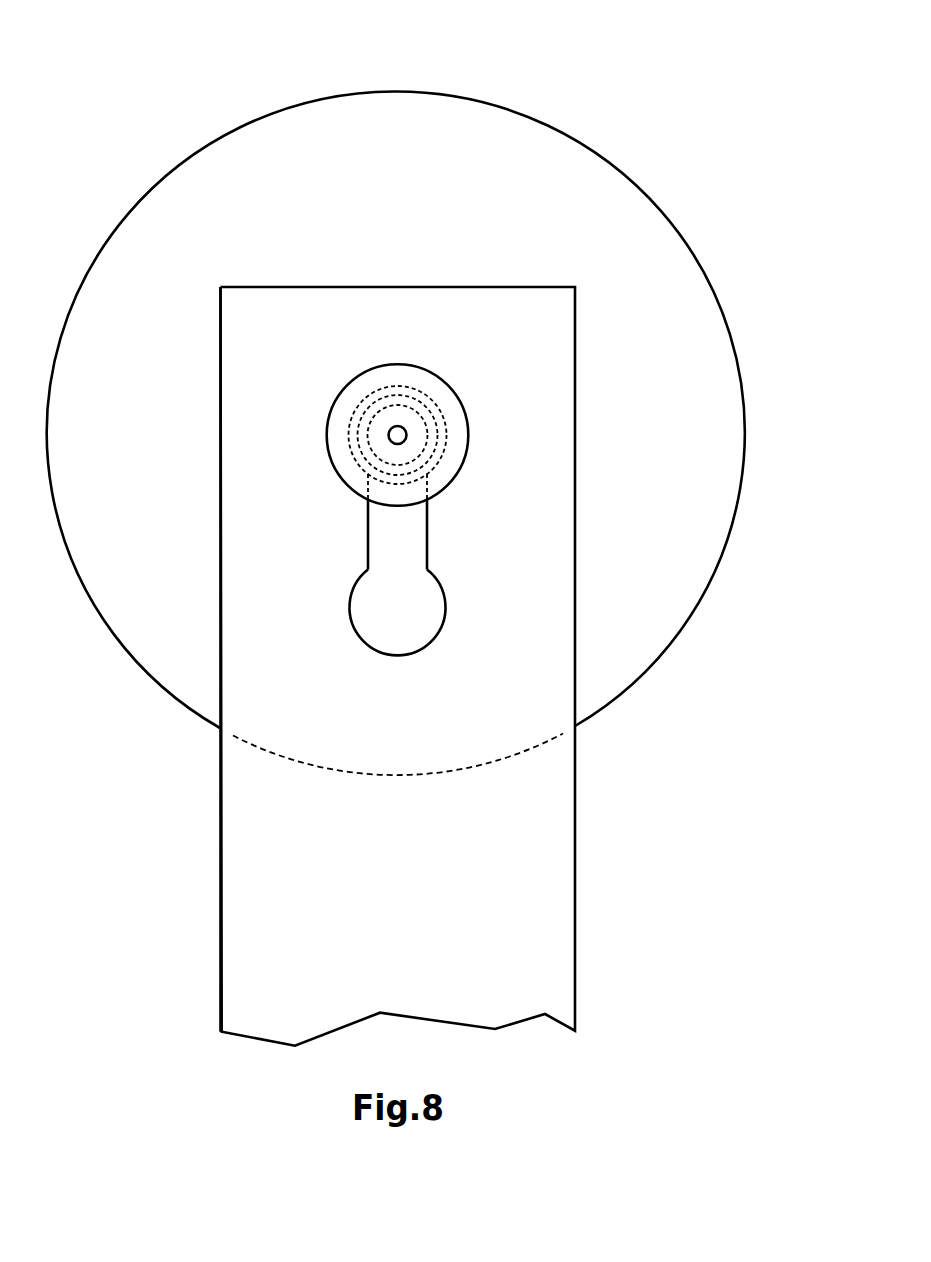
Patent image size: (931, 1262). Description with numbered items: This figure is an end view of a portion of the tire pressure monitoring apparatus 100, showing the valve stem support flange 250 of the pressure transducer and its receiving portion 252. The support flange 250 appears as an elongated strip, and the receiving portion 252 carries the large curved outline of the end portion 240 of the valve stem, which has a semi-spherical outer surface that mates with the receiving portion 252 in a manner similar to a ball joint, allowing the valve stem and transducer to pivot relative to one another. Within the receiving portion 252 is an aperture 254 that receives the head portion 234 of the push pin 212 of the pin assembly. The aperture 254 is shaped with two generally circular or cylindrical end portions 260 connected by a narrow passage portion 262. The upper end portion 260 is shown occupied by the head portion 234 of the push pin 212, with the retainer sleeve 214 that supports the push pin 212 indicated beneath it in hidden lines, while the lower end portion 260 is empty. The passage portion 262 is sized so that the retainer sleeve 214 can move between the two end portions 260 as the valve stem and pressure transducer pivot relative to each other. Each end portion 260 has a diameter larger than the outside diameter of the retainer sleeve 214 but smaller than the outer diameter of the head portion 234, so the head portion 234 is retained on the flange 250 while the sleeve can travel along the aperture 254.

The tire pressure monitoring apparatus 100 is at (692, 130).
The push pin 212 is at (427, 380).
The retainer sleeve 214 is at (428, 415).
The head portion 234 is at (398, 373).
The end portion 240 is at (668, 519).
The valve stem support flange 250 is at (520, 728).
The receiving portion 252 is at (265, 452).
The aperture 254 is at (410, 521).
The end portions 260 is at (447, 434).
The passage portion 262 is at (368, 533).